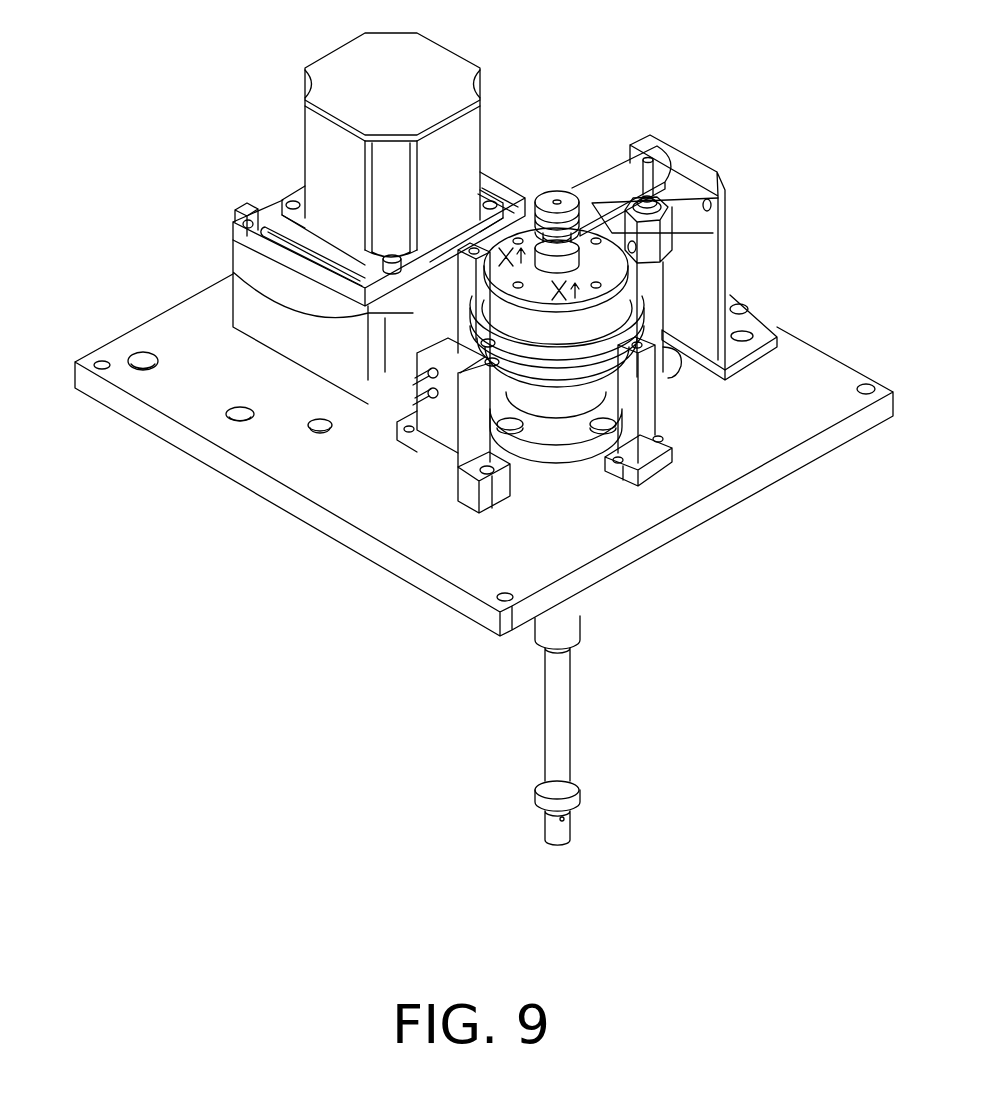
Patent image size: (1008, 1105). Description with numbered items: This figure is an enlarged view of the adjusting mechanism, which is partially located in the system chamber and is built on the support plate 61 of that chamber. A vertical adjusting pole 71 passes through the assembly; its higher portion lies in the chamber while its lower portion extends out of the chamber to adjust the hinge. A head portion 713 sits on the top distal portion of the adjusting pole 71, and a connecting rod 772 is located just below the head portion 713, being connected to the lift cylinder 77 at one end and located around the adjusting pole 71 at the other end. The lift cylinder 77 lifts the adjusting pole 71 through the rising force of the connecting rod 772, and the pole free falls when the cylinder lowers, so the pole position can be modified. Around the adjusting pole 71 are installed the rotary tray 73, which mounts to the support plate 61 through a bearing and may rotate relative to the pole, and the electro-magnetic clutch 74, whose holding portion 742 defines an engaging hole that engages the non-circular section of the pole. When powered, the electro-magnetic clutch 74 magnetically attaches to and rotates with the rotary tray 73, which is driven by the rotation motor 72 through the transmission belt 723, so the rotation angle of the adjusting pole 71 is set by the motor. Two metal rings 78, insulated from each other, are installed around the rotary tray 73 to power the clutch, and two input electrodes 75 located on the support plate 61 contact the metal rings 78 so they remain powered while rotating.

The support plate 61 is at (173, 388).
The adjusting pole 71 is at (557, 742).
The rotation motor 72 is at (328, 144).
The transmission belt 723 is at (413, 313).
The head portion 713 is at (548, 200).
The connecting rod 772 is at (618, 182).
The holding portion 742 is at (610, 235).
The lift cylinder 77 is at (653, 286).
The electro-magnetic clutch 74 is at (600, 314).
The input electrodes 75 is at (413, 388).
The metal rings 78 is at (522, 370).
The rotary tray 73 is at (583, 387).